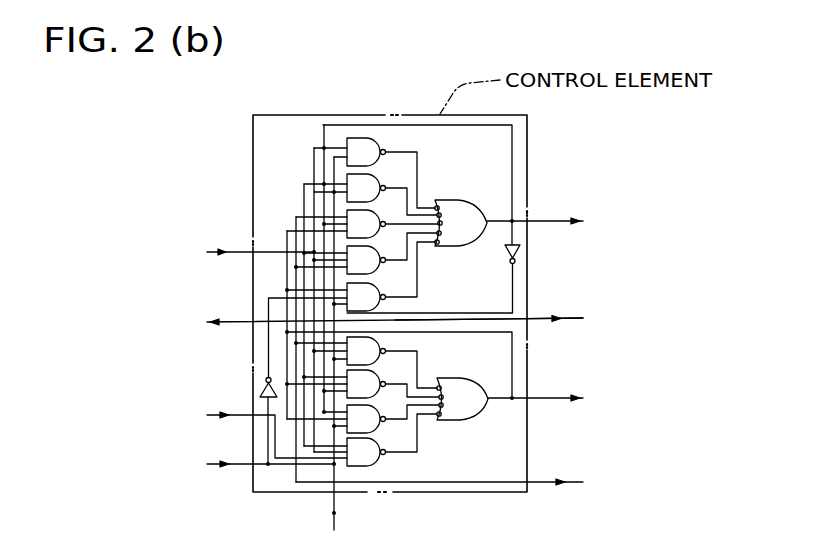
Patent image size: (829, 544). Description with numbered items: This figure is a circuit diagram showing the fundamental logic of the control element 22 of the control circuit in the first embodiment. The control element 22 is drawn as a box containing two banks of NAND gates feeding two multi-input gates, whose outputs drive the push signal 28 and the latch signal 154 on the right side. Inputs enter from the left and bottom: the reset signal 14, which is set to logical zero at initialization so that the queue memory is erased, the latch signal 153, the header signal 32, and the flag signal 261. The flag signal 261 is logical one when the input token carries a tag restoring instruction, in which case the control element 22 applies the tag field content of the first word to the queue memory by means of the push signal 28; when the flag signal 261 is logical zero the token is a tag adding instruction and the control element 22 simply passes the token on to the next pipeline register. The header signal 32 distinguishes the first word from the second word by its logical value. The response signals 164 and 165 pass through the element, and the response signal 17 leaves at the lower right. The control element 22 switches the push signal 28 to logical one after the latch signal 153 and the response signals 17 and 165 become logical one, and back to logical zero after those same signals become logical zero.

The control element 22 is at (349, 114).
The reset signal 14 is at (337, 500).
The latch signal 153 is at (214, 251).
The latch signal 154 is at (563, 220).
The response signal 164 is at (221, 321).
The response signal 165 is at (570, 318).
The push signal 28 is at (567, 397).
The response signal 17 is at (570, 481).
The header signal 32 is at (213, 414).
The flag signal 261 is at (243, 461).